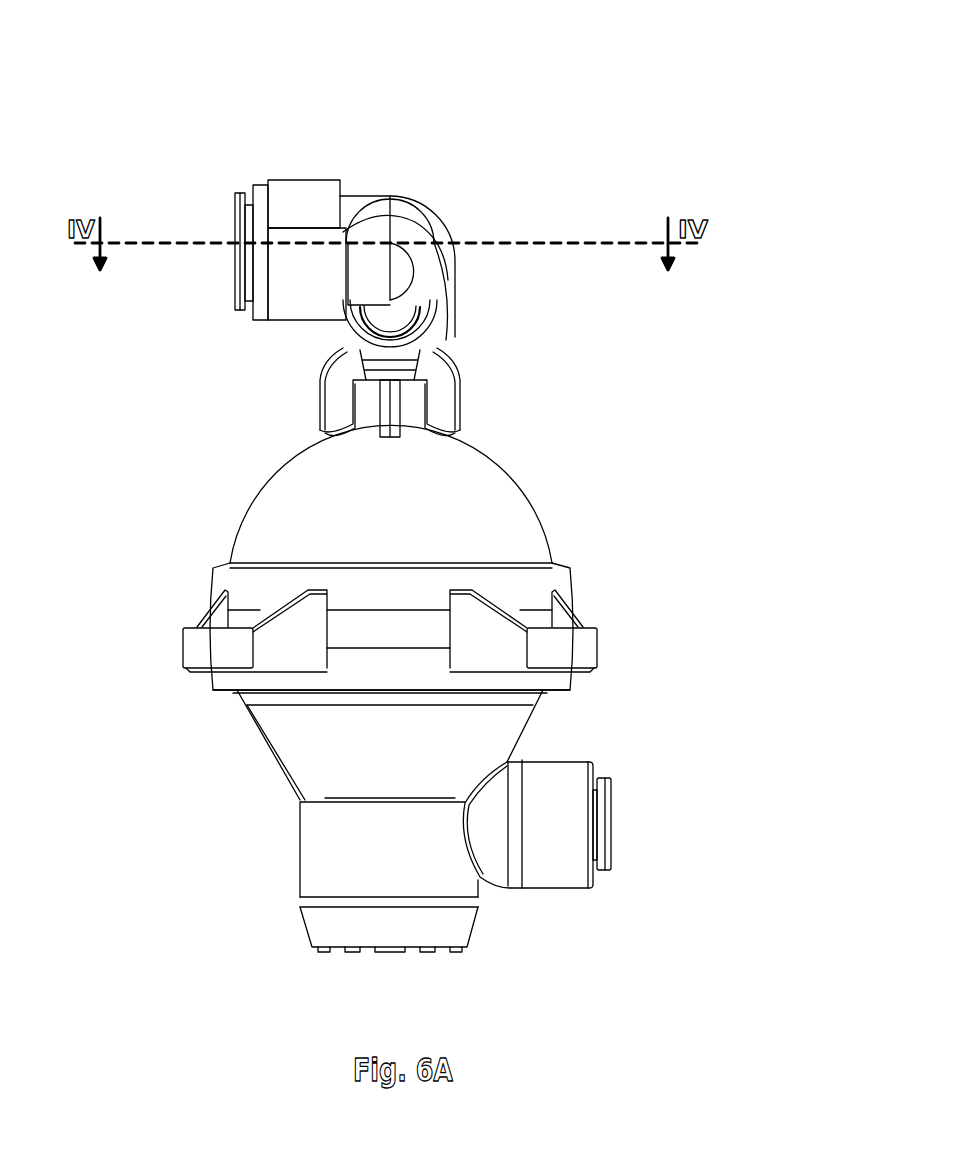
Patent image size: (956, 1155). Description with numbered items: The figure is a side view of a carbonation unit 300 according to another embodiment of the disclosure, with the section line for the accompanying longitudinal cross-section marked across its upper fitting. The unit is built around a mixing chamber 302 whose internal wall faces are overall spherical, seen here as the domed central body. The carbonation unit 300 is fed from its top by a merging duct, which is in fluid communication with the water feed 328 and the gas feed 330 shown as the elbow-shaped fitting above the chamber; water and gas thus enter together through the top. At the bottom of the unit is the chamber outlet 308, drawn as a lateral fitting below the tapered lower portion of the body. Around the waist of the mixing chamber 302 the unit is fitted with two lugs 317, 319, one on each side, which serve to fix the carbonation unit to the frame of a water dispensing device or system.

The carbonation unit 300 is at (733, 112).
The mixing chamber 302 is at (487, 485).
The chamber outlet 308 is at (570, 783).
The lug 317 is at (580, 647).
The lug 319 is at (228, 643).
The water feed 328 is at (293, 200).
The gas feed 330 is at (297, 287).